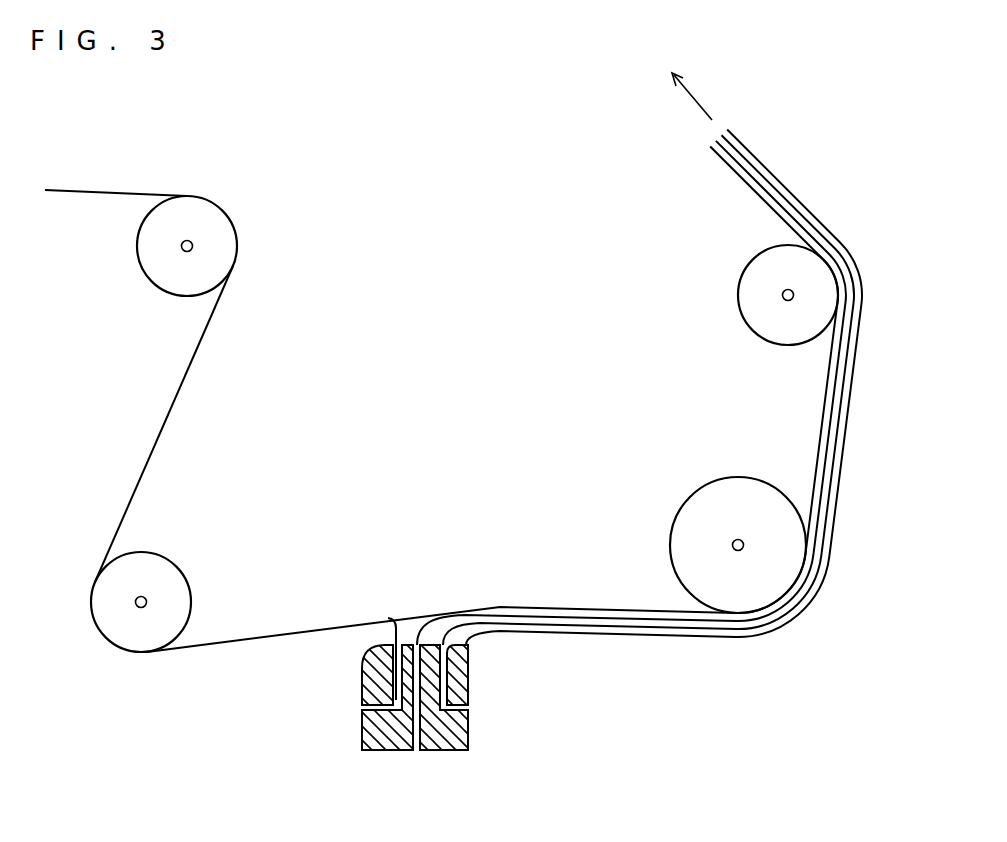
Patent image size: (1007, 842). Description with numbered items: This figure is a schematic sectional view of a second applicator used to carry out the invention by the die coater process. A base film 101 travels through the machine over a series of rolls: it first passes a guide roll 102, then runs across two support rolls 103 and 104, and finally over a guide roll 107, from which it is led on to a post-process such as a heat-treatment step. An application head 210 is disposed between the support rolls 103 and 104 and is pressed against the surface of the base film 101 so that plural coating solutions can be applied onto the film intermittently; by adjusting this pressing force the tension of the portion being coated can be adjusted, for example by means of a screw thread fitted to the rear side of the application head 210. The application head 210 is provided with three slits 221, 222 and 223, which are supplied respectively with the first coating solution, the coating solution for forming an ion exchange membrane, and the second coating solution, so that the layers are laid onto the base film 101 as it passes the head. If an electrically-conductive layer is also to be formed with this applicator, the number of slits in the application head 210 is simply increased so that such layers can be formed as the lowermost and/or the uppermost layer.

The base film 101 is at (180, 397).
The guide roll 102 is at (212, 235).
The support roll 103 is at (173, 587).
The support roll 104 is at (710, 513).
The guide roll 107 is at (765, 272).
The application head 210 is at (283, 655).
The slit 221 is at (362, 712).
The slit 222 is at (417, 645).
The slit 223 is at (468, 712).